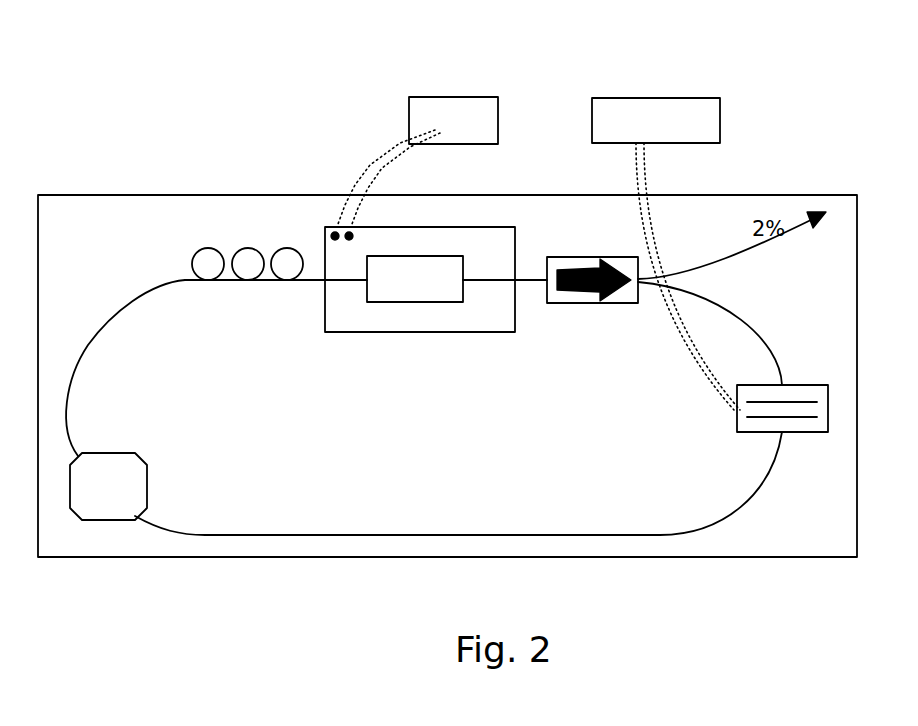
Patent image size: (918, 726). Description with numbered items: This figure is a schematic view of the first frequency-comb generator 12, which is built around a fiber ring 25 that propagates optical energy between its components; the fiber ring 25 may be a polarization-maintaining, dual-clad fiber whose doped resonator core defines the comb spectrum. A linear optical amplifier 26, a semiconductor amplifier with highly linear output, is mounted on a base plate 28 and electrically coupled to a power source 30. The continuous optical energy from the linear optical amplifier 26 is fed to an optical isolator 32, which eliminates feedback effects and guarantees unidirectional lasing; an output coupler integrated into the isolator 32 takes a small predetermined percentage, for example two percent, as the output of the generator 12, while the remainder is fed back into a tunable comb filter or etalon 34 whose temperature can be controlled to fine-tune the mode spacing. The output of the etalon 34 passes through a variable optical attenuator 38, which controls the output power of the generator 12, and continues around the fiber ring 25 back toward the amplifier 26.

The first frequency-comb generator 12 is at (767, 557).
The fiber ring 25 is at (260, 535).
The linear optical amplifier 26 is at (430, 302).
The base plate 28 is at (363, 332).
The power source 30 is at (425, 97).
The optical isolator 32 is at (581, 307).
The etalon 34 is at (738, 433).
The variable optical attenuator 38 is at (135, 455).